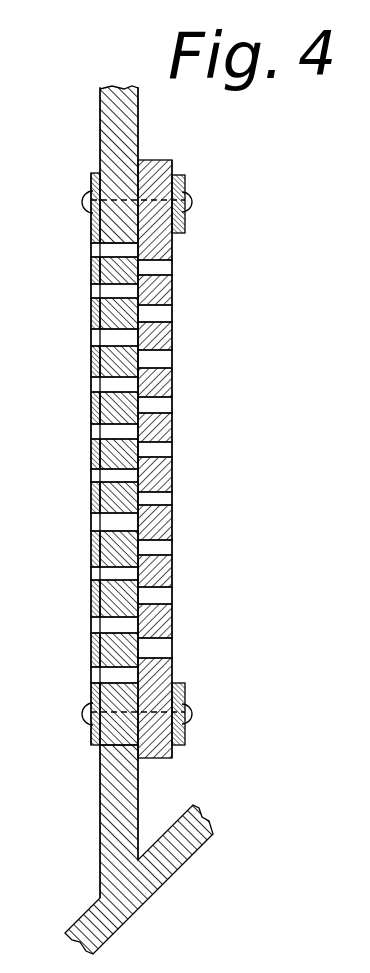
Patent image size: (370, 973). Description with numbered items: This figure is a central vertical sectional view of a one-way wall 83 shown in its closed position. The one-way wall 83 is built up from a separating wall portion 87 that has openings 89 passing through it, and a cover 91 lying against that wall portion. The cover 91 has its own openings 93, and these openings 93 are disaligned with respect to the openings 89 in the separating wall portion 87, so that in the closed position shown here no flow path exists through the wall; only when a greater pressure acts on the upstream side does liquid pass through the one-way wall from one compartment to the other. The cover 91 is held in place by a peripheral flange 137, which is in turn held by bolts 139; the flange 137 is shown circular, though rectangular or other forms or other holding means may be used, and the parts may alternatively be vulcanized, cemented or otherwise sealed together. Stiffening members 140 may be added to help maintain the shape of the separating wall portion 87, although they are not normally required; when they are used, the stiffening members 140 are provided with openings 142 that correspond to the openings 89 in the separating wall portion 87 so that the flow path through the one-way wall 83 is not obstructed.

The one-way wall 83 is at (100, 126).
The separating wall portion 87 is at (92, 356).
The openings 89 is at (108, 252).
The cover 91 is at (172, 420).
The disaligned openings 93 is at (172, 313).
The peripheral flange 137 is at (186, 224).
The bolts 139 is at (185, 200).
The stiffening members 140 is at (92, 457).
The openings 142 is at (92, 676).